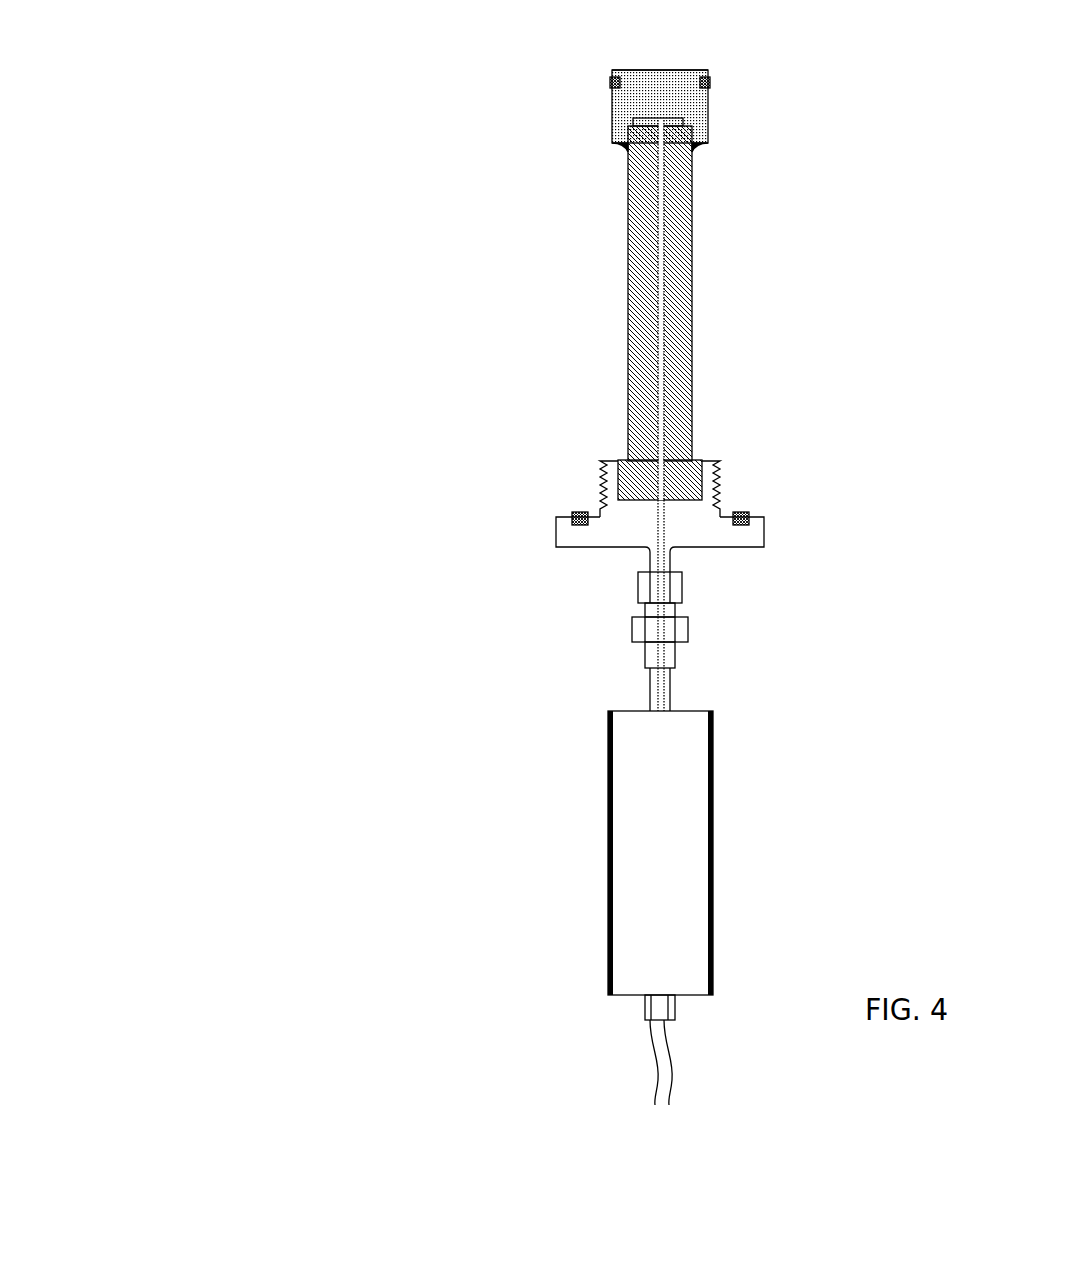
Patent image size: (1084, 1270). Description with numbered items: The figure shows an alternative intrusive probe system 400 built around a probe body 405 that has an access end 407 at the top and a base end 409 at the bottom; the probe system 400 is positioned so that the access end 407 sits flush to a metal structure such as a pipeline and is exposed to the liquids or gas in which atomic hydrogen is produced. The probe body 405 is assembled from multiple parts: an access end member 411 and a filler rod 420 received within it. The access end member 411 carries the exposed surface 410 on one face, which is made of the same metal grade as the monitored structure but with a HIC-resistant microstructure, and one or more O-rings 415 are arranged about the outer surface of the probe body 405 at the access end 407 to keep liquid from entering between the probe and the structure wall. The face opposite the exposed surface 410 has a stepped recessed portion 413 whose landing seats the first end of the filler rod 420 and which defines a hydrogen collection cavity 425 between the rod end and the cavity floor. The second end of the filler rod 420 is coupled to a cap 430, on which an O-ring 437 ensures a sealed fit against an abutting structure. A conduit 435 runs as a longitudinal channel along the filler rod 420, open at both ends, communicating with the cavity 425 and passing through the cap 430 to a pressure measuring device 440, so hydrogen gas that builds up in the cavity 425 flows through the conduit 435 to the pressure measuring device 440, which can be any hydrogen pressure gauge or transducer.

The intrusive probe system 400 is at (222, 213).
The probe body 405 is at (406, 77).
The access end 407 is at (652, 73).
The exposed surface 410 is at (680, 70).
The access end member 411 is at (630, 97).
The O-ring 415 is at (721, 112).
The hydrogen collection cavity 425 is at (579, 177).
The recessed portion 413 is at (702, 143).
The filler rod 420 is at (730, 293).
The conduit 435 is at (661, 356).
The base end 409 is at (705, 491).
The O-ring 437 is at (578, 514).
The cap 430 is at (603, 552).
The pressure measuring device 440 is at (730, 908).